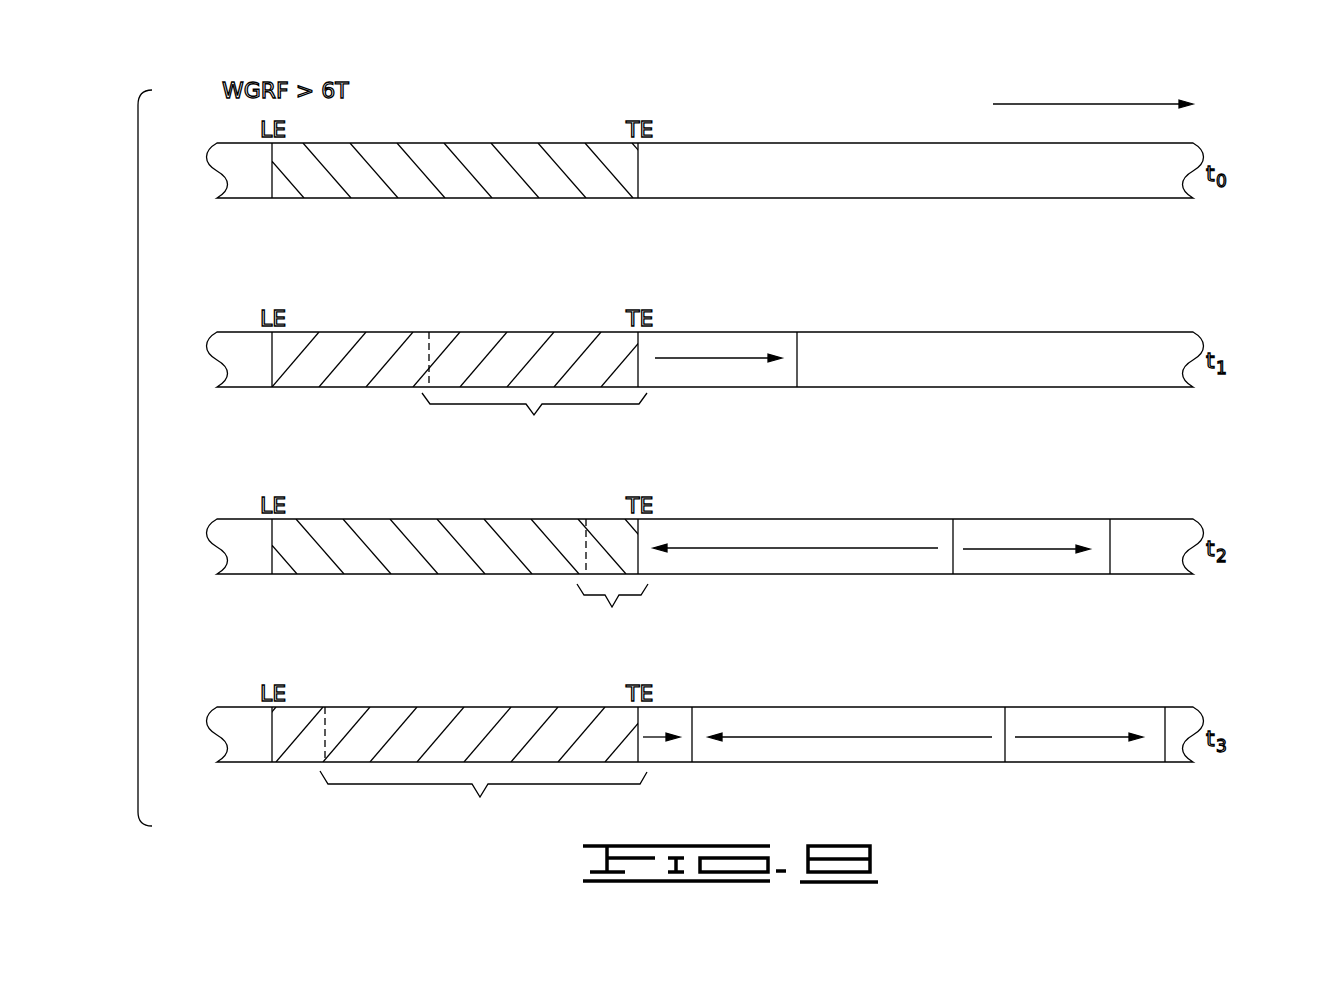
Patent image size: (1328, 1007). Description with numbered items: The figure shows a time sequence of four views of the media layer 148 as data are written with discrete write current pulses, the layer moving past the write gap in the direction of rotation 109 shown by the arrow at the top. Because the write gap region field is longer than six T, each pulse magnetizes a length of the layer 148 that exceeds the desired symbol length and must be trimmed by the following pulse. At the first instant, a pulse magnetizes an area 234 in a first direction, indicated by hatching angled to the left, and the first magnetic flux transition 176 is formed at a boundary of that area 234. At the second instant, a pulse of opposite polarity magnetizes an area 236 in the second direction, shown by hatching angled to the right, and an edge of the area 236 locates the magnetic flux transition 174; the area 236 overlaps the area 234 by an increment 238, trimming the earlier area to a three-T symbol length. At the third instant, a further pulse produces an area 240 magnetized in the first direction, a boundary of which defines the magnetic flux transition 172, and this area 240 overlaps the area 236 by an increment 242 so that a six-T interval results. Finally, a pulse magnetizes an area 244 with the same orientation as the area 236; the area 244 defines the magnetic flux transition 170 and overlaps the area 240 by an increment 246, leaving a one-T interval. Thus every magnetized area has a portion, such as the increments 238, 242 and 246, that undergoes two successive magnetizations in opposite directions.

The direction of rotation 109 is at (1100, 104).
The media layer 148 is at (245, 190).
The magnetic flux transition 170 is at (646, 727).
The magnetic flux transition 172 is at (644, 538).
The magnetic flux transition 174 is at (642, 352).
The first magnetic flux transition 176 is at (642, 168).
The magnetized area 234 is at (425, 150).
The magnetized area 236 is at (428, 334).
The overlap increment 238 is at (534, 415).
The magnetized area 240 is at (425, 522).
The overlap increment 242 is at (612, 607).
The magnetized area 244 is at (425, 710).
The overlap increment 246 is at (480, 797).